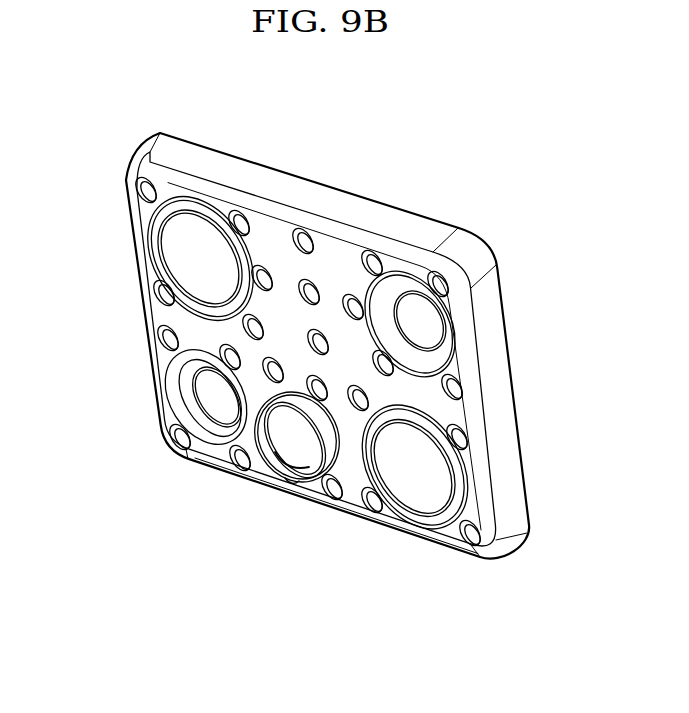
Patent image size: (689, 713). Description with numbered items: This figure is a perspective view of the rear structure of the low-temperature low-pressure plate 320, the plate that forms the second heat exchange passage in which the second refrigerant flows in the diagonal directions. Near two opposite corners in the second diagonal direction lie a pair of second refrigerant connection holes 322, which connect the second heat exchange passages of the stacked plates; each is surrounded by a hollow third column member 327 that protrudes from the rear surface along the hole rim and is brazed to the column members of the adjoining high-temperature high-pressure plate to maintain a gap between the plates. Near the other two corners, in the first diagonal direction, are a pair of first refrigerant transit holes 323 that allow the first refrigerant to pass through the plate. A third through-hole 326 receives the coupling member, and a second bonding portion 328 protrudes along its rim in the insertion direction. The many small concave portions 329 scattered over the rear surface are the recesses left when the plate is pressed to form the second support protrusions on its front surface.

The low-temperature low-pressure plate 320 is at (476, 165).
The second refrigerant connection hole 322 is at (194, 269).
The first refrigerant transit hole 323 is at (416, 318).
The third through-hole 326 is at (302, 446).
The third column member 327 is at (154, 245).
The second bonding portion 328 is at (330, 442).
The concave portion 329 is at (298, 290).